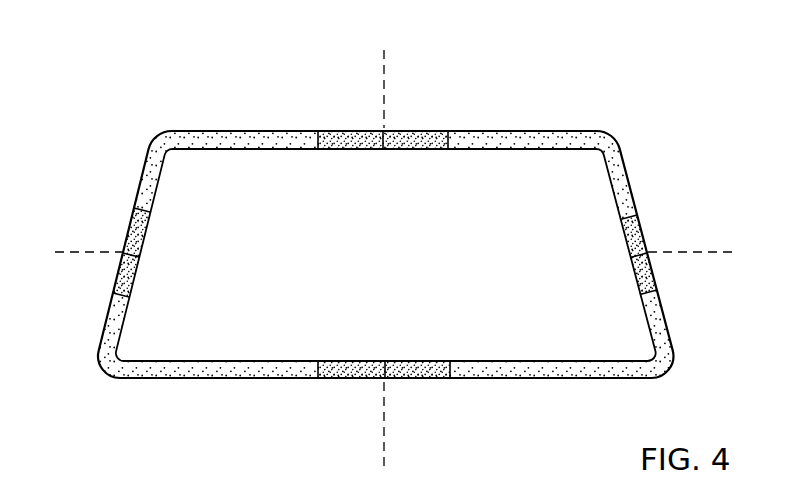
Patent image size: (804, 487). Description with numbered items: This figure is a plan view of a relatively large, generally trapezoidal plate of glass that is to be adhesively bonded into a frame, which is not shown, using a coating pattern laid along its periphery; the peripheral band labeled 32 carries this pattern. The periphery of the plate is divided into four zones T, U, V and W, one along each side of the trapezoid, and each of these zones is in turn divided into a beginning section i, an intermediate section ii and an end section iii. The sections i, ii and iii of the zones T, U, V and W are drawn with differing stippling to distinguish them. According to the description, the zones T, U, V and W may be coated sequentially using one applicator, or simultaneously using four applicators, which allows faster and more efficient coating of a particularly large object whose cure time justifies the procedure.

The adhesive bead / sealing strip around window frame 32 is at (518, 173).
The beginning section i is at (348, 140).
The intermediate section ii is at (210, 138).
The end section iii is at (424, 140).
The zone T is at (192, 120).
The zone U is at (160, 407).
The zone V is at (575, 417).
The zone W is at (635, 139).